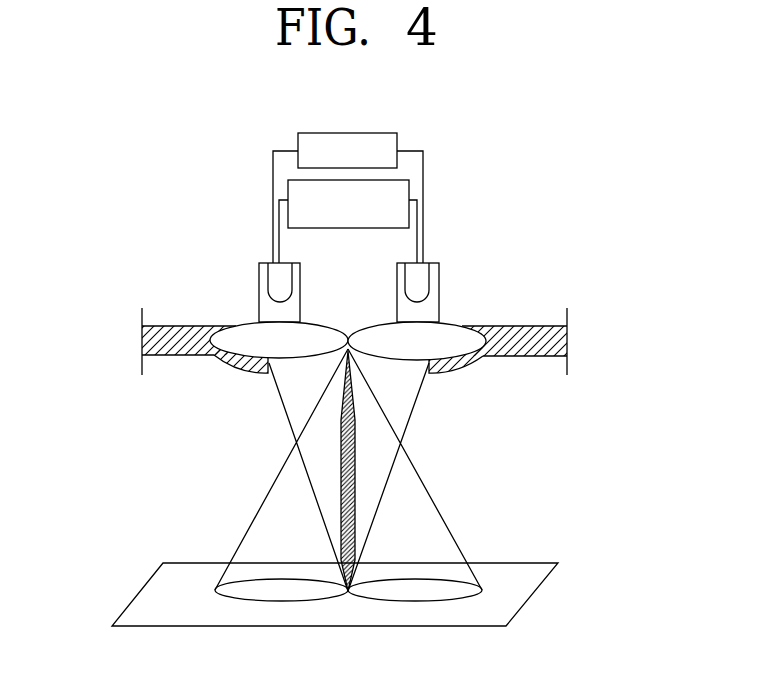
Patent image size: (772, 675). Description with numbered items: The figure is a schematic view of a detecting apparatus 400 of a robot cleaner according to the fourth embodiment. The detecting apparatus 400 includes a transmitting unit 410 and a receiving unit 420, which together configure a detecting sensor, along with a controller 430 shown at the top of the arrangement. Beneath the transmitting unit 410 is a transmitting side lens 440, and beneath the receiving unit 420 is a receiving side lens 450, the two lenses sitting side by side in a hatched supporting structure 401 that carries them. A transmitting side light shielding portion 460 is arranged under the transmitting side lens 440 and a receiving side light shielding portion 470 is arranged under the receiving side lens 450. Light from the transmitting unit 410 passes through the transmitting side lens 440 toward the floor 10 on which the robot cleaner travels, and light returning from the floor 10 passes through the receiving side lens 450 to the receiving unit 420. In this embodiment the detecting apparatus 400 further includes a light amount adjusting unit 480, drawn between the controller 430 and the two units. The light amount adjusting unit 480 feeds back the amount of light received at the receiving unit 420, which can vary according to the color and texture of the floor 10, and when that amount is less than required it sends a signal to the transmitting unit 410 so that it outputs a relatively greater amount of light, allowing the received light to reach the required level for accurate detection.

The detecting apparatus 400 is at (489, 186).
The controller 430 is at (325, 132).
The light amount adjusting unit 480 is at (287, 186).
The transmitting unit 410 is at (259, 268).
The receiving unit 420 is at (440, 269).
The housing 401 is at (551, 330).
The transmitting side lens 440 is at (232, 332).
The receiving side lens 450 is at (466, 335).
The transmitting side light shielding portion 460 is at (230, 363).
The receiving side light shielding portion 470 is at (467, 363).
The floor 10 is at (520, 570).